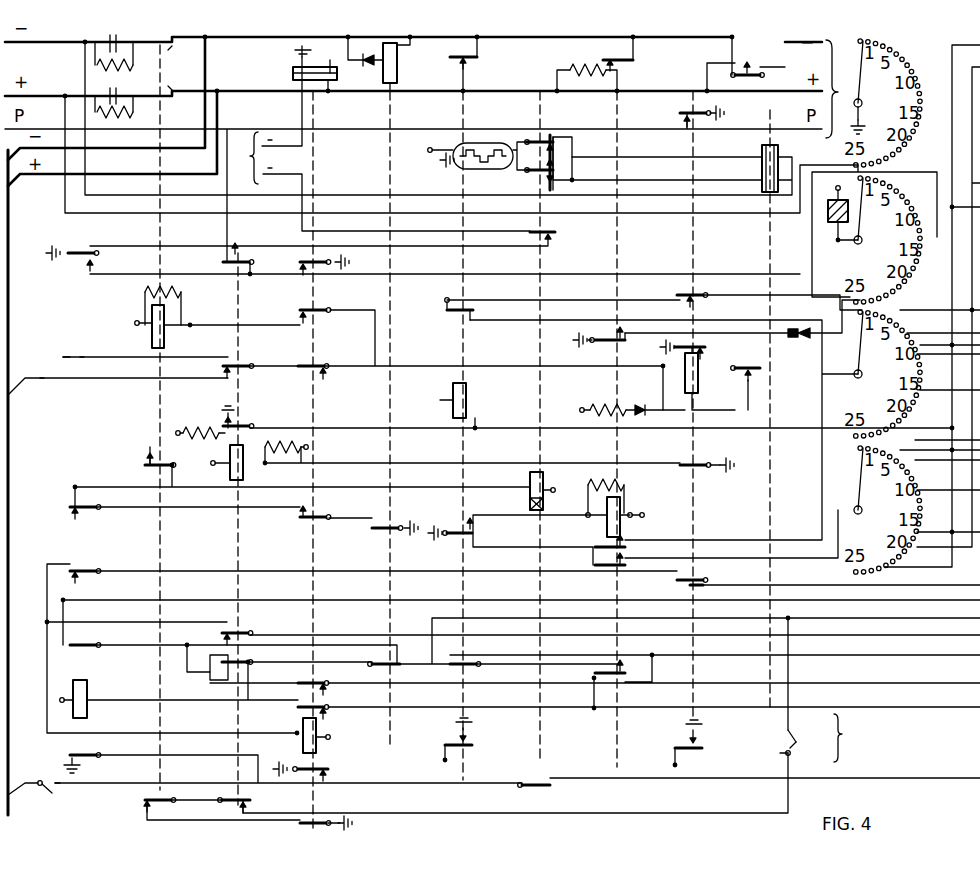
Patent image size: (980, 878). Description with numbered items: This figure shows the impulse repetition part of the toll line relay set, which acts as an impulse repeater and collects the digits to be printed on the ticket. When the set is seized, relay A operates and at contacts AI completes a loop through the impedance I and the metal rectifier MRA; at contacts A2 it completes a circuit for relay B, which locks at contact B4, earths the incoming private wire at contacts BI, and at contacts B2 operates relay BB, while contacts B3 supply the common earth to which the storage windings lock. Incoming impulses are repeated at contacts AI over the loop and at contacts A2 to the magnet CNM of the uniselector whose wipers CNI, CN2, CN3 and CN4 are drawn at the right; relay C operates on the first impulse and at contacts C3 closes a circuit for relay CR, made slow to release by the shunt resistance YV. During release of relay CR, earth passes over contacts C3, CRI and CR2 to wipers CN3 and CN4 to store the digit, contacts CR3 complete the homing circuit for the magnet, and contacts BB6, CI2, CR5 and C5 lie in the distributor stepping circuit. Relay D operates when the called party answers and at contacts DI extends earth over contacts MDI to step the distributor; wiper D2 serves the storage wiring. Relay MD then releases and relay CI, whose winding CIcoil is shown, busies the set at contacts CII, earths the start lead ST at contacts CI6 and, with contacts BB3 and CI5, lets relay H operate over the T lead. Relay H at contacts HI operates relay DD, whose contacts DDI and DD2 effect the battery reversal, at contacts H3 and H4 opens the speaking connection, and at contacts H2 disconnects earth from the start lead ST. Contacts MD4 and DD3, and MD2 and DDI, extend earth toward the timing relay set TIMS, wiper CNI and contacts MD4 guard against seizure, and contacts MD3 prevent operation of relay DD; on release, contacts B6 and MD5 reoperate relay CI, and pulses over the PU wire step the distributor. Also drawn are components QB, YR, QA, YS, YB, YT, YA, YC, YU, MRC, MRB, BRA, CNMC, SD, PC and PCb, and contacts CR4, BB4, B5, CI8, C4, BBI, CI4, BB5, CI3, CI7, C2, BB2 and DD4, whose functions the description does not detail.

The capacitor QB is at (132, 49).
The resistor YR is at (109, 65).
The capacitor QA is at (132, 86).
The resistor YS is at (125, 107).
The contacts H3 is at (182, 47).
The contacts H4 is at (182, 77).
The metal rectifier MRA is at (292, 44).
The impedance I is at (293, 73).
The rectifier MRC is at (357, 72).
The relay D is at (397, 75).
The relay CI is at (475, 66).
The resistor YB is at (590, 64).
The relay contact CR4 is at (639, 64).
The contacts A1 AI is at (764, 58).
The contacts B1 BI is at (682, 110).
The supply terminals SD is at (843, 89).
The wiper CN1 CNI is at (898, 115).
The counter switch CN2 is at (902, 252).
The wiper CN3 is at (902, 386).
The wiper CN4 is at (902, 522).
The magnet CNM is at (832, 182).
The counter motor rectifier CNMC is at (800, 343).
The bimetal thermal element BRA is at (476, 169).
The contacts DD2 is at (537, 132).
The relay contact DD4 is at (550, 176).
The relay A is at (760, 168).
The contacts DD3 is at (548, 232).
The contacts MD4 is at (71, 253).
The relay contact BB4 is at (220, 262).
The contacts CI1 CII is at (302, 260).
The relay contact B5 is at (678, 294).
The resistor YT is at (184, 288).
The relay contact CI8 is at (300, 312).
The relay contact C4 is at (445, 322).
The relay H is at (144, 344).
The terminal PC is at (51, 361).
The lead T is at (46, 376).
The contacts BB3 is at (232, 363).
The contacts CI5 is at (303, 372).
The contacts CR3 is at (610, 342).
The contact B4 is at (704, 347).
The relay C is at (466, 392).
The resistor YA is at (600, 400).
The rectifier MRB is at (646, 406).
The relay B is at (698, 388).
The contacts A2 is at (752, 392).
The resistor YC is at (206, 428).
The relay contact BB1 BBI is at (236, 424).
The relay BB is at (243, 474).
The resistor YU is at (300, 442).
The contacts H1 HI is at (144, 465).
The contacts MD3 is at (90, 506).
The relay contact CI4 is at (316, 516).
The wiper D2 is at (390, 526).
The relay DD is at (530, 488).
The relay CR is at (607, 520).
The shunt resistance YV is at (616, 484).
The contacts B2 is at (696, 452).
The contacts C3 is at (458, 538).
The contacts CR1 CRI is at (626, 545).
The contacts CR2 is at (626, 563).
The contacts B6 is at (698, 580).
The contacts MD5 is at (90, 568).
The relay contact BB5 is at (240, 632).
The contacts MD1 MDI is at (90, 644).
The contacts BB6 is at (242, 664).
The contacts D1 DI is at (396, 668).
The contacts C5 is at (470, 670).
The contacts CR5 is at (594, 674).
The relay contact CI3 is at (328, 686).
The relay MD is at (87, 692).
The contacts CI2 is at (291, 712).
The relay CI CIcoil is at (302, 748).
The contacts MD2 is at (90, 756).
The relay contact CI7 is at (328, 756).
The relay contact C2 is at (442, 748).
The contacts B3 is at (672, 750).
The start lead ST is at (46, 776).
The PU wire PU is at (798, 752).
The terminal group PC PCb is at (850, 738).
The contacts H2 is at (144, 800).
The relay contact BB2 is at (248, 798).
The contacts CI6 is at (324, 822).
The contacts DD1 DDI is at (538, 790).
The timing relay set TIMS is at (282, 138).